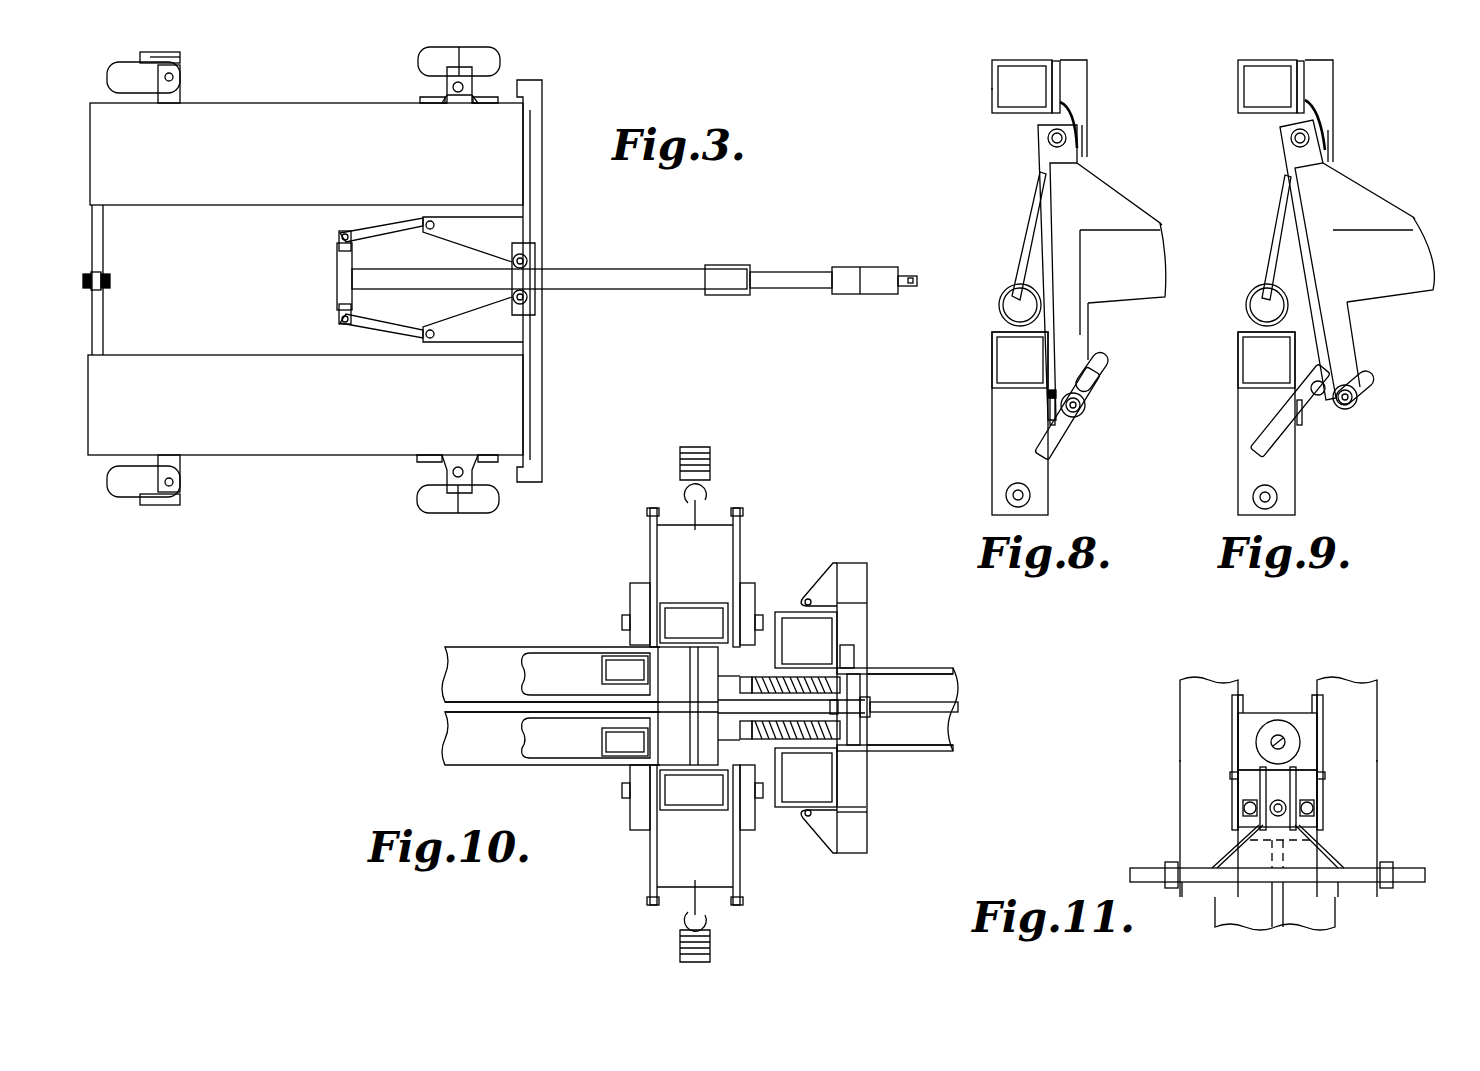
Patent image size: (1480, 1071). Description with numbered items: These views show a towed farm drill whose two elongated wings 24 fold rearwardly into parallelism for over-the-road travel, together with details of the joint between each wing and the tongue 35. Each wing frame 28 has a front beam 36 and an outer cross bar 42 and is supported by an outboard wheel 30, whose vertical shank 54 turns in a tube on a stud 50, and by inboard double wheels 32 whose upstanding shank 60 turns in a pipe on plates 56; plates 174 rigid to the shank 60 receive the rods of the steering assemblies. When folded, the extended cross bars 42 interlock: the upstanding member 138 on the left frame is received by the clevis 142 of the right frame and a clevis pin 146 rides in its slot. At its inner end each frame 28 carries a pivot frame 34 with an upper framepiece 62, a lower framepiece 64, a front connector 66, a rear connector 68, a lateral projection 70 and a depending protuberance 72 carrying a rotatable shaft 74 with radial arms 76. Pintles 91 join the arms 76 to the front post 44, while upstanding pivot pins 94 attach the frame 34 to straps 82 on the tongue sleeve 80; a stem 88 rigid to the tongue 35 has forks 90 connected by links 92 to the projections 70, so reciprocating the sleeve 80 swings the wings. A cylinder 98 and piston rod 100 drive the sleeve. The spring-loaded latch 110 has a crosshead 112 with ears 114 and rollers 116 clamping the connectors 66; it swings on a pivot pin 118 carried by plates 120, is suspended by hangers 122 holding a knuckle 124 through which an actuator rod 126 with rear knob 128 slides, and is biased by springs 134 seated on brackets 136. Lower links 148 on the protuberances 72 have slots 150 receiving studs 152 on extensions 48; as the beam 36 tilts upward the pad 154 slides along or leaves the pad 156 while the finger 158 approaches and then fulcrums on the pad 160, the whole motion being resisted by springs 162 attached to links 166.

In FIG. 3, the wing 24 is at (280, 207).
In FIG. 8, the wing frame 28 is at (1160, 215).
In FIG. 9, the wing frame 28 is at (1412, 212).
In FIG. 3, the outboard wheel 30 is at (112, 72).
In FIG. 3, the inboard double wheels 32 is at (498, 60).
In FIG. 3, the pivot frame 34 is at (541, 97).
In FIG. 8, the pivot frame 34 is at (980, 88).
In FIG. 10, the pivot frame 34 is at (548, 640).
In FIG. 11, the pivot frame 34 is at (1212, 668).
In FIG. 3, the tongue 35 is at (800, 272).
In FIG. 8, the front beam 36 is at (1160, 245).
In FIG. 9, the front beam 36 is at (1418, 248).
In FIG. 3, the outer cross bar 42 is at (103, 222).
In FIG. 8, the front post 44 is at (1042, 178).
In FIG. 9, the front post 44 is at (1290, 178).
In FIG. 8, the extension 48 is at (1088, 332).
In FIG. 9, the extension 48 is at (1352, 322).
In FIG. 10, the extension 48 is at (676, 612).
In FIG. 3, the stud 50 is at (168, 103).
In FIG. 3, the vertical shank 54 is at (178, 70).
In FIG. 3, the plates 56 is at (466, 103).
In FIG. 3, the upstanding shank 60 is at (452, 87).
In FIG. 3, the upper framepiece 62 is at (536, 163).
In FIG. 8, the upper framepiece 62 is at (992, 65).
In FIG. 9, the upper framepiece 62 is at (1258, 60).
In FIG. 8, the lower framepiece 64 is at (992, 355).
In FIG. 9, the lower framepiece 64 is at (1238, 355).
In FIG. 10, the lower framepiece 64 is at (445, 708).
In FIG. 10, the front connector 66 is at (840, 625).
In FIG. 11, the front connector 66 is at (1185, 692).
In FIG. 8, the rear connector 68 is at (1087, 75).
In FIG. 9, the rear connector 68 is at (1333, 95).
In FIG. 3, the lateral projection 70 is at (453, 218).
In FIG. 8, the depending protuberance 72 is at (992, 465).
In FIG. 9, the depending protuberance 72 is at (1238, 487).
In FIG. 11, the depending protuberance 72 is at (1308, 925).
In FIG. 8, the rotatable shaft 74 is at (1000, 300).
In FIG. 9, the rotatable shaft 74 is at (1250, 300).
In FIG. 10, the rotatable shaft 74 is at (530, 680).
In FIG. 8, the radial arm 76 is at (1030, 228).
In FIG. 9, the radial arm 76 is at (1282, 222).
In FIG. 10, the radial arm 76 is at (612, 694).
In FIG. 3, the tongue sleeve 80 is at (662, 285).
In FIG. 11, the tongue sleeve 80 is at (1252, 713).
In FIG. 3, the straps 82 is at (545, 272).
In FIG. 3, the stem 88 is at (337, 280).
In FIG. 3, the fork 90 is at (339, 240).
In FIG. 8, the pintle 91 is at (1048, 140).
In FIG. 9, the pintle 91 is at (1291, 140).
In FIG. 3, the link 92 is at (395, 235).
In FIG. 3, the pivot pin 94 is at (527, 258).
In FIG. 11, the cylinder 98 is at (1283, 725).
In FIG. 11, the piston rod 100 is at (1285, 740).
In FIG. 10, the latch 110 is at (872, 588).
In FIG. 11, the latch 110 is at (1355, 895).
In FIG. 10, the crosshead 112 is at (862, 807).
In FIG. 11, the crosshead 112 is at (1195, 885).
In FIG. 10, the ears 114 is at (867, 570).
In FIG. 11, the ears 114 is at (1140, 868).
In FIG. 10, the rollers 116 is at (804, 598).
In FIG. 10, the pivot pin 118 is at (850, 660).
In FIG. 11, the pivot pin 118 is at (1228, 775).
In FIG. 10, the plates 120 is at (960, 708).
In FIG. 11, the plates 120 is at (1232, 718).
In FIG. 10, the hangers 122 is at (880, 668).
In FIG. 11, the hangers 122 is at (1230, 850).
In FIG. 10, the knuckle 124 is at (868, 700).
In FIG. 11, the knuckle 124 is at (1243, 792).
In FIG. 10, the actuator rod 126 is at (897, 710).
In FIG. 11, the actuator rod 126 is at (1300, 800).
In FIG. 10, the rear knob 128 is at (835, 706).
In FIG. 10, the springs 134 is at (790, 676).
In FIG. 11, the springs 134 is at (1315, 808).
In FIG. 10, the brackets 136 is at (718, 745).
In FIG. 3, the upstanding member 138 is at (100, 272).
In FIG. 3, the clevis 142 is at (108, 286).
In FIG. 3, the clevis pin 146 is at (108, 274).
In FIG. 8, the lower link 148 is at (1065, 440).
In FIG. 9, the lower link 148 is at (1305, 462).
In FIG. 10, the lower link 148 is at (740, 583).
In FIG. 8, the elongated slot 150 is at (1100, 368).
In FIG. 9, the elongated slot 150 is at (1370, 385).
In FIG. 8, the stud 152 is at (1082, 405).
In FIG. 9, the stud 152 is at (1355, 402).
In FIG. 10, the stud 152 is at (622, 622).
In FIG. 8, the pad 154 is at (1046, 395).
In FIG. 9, the pad 154 is at (1320, 382).
In FIG. 8, the pad 156 is at (1050, 415).
In FIG. 9, the pad 156 is at (1297, 415).
In FIG. 8, the finger 158 is at (1075, 112).
In FIG. 9, the finger 158 is at (1322, 122).
In FIG. 8, the pad 160 is at (1062, 70).
In FIG. 9, the pad 160 is at (1303, 70).
In FIG. 10, the spring 162 is at (708, 465).
In FIG. 10, the link 166 is at (732, 540).
In FIG. 3, the plates 174 is at (455, 60).